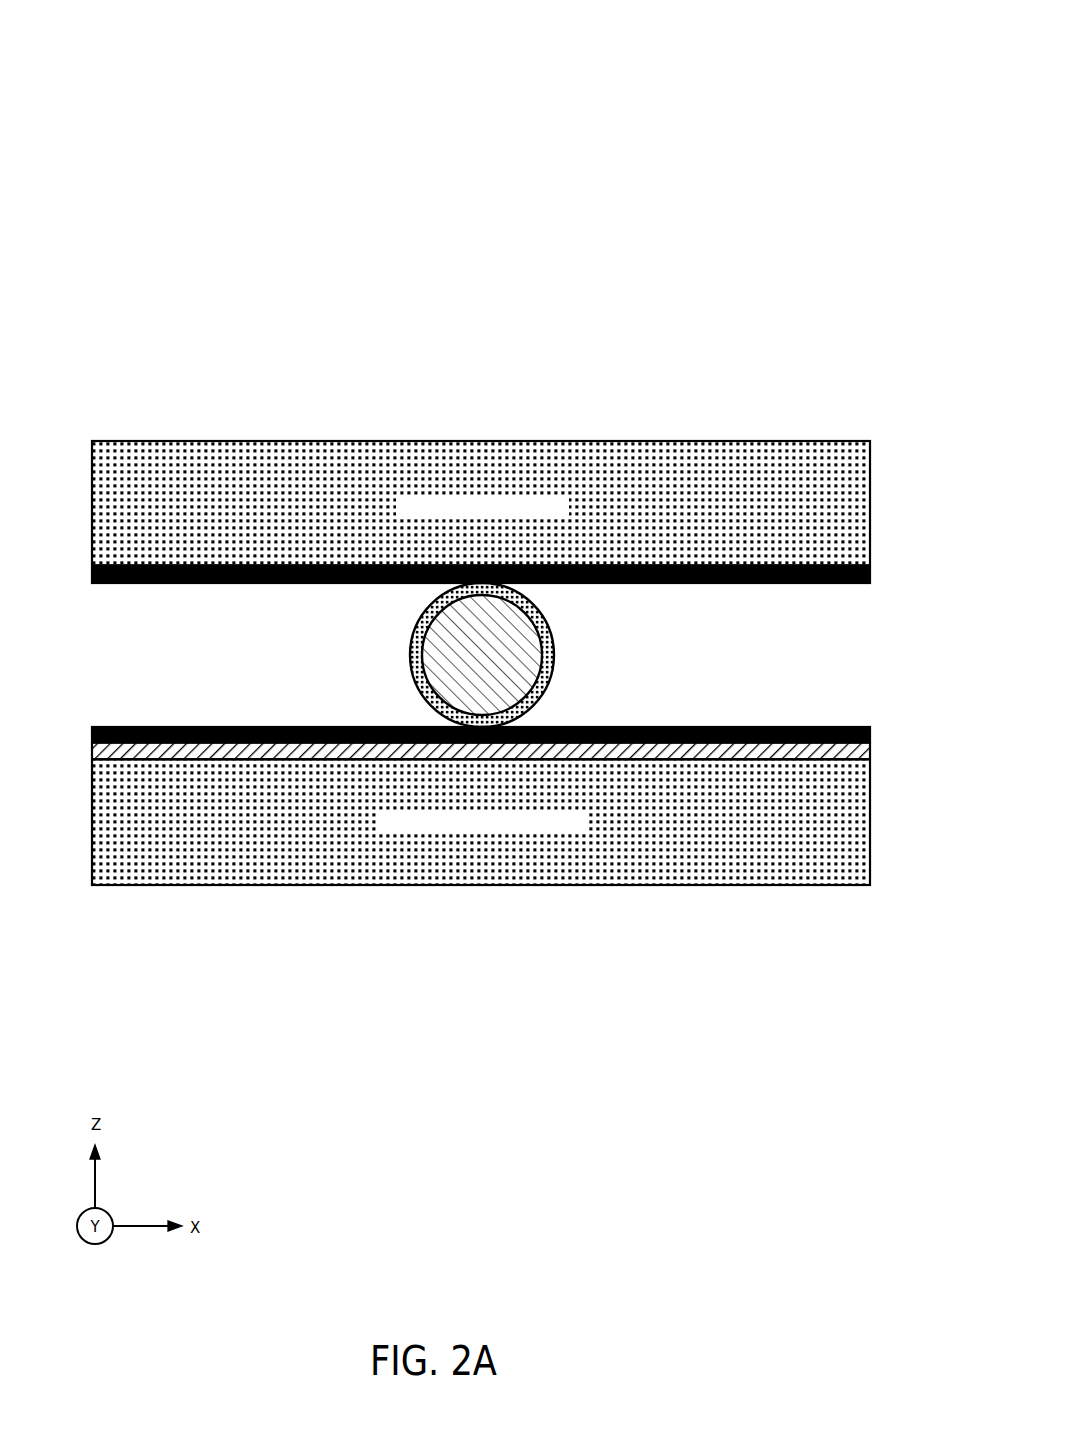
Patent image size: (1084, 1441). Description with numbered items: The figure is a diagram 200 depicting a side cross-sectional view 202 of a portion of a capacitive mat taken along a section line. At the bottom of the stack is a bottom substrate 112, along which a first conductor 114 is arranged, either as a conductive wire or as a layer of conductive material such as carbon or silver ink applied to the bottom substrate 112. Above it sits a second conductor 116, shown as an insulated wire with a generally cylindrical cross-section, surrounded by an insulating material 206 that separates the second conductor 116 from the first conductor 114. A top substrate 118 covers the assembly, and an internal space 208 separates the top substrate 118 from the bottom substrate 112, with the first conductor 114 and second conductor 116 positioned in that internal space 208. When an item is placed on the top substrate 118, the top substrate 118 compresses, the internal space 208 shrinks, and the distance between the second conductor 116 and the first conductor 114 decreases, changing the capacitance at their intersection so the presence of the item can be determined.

The diagram 200 is at (845, 48).
The side cross-sectional view 202 is at (476, 601).
The top substrate 118 is at (481, 503).
The bottom substrate 112 is at (481, 822).
The first conductor 114 is at (317, 750).
The second conductor 116 is at (517, 653).
The insulating material 206 is at (407, 645).
The internal space 208 is at (253, 608).